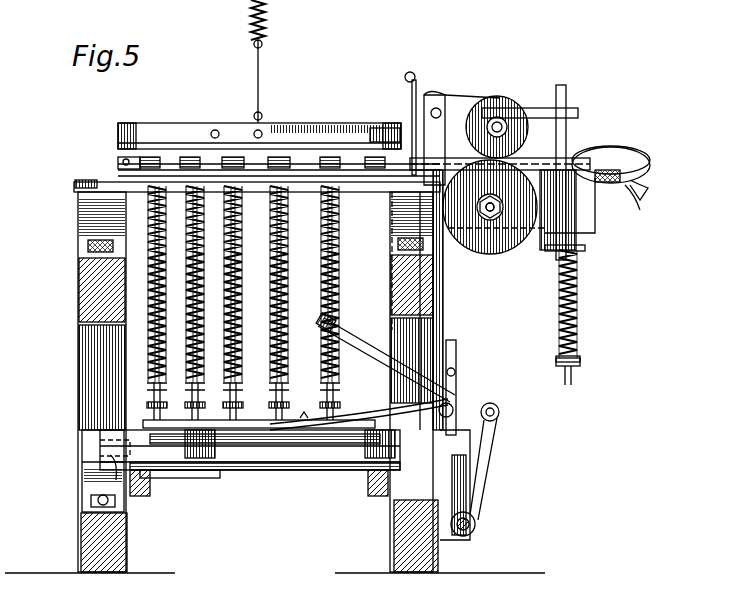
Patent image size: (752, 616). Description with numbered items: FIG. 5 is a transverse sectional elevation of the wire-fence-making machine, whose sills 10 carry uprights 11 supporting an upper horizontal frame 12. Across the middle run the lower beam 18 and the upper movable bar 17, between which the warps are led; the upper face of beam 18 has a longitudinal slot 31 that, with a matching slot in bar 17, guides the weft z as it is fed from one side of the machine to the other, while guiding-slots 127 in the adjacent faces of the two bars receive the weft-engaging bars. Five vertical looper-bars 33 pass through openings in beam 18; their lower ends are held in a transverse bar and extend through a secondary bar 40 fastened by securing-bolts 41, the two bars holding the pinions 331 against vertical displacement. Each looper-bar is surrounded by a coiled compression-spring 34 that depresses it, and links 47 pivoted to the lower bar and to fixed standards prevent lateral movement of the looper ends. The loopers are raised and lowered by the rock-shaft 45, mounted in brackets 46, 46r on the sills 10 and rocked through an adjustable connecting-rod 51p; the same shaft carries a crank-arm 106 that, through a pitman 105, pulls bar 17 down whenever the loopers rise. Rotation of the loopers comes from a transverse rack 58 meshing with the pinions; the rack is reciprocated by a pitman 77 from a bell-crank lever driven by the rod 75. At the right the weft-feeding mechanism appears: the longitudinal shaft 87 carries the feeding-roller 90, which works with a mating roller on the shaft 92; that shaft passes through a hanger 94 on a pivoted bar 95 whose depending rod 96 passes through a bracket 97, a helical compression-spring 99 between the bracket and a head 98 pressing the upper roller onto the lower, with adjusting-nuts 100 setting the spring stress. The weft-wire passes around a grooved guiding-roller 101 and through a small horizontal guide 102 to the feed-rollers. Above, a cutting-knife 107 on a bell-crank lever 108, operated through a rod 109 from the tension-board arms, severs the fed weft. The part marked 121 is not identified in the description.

The sills 10 is at (128, 540).
The uprights 11 is at (80, 393).
The upper horizontal frame 12 is at (90, 305).
The upper movable bar 17 is at (186, 112).
The lower beam 18 is at (122, 168).
The wefts z is at (118, 162).
The longitudinally-disposed slot 31 is at (198, 130).
The looper-bars 33 is at (234, 392).
The pinions 331 is at (200, 470).
The coiled compression-spring 34 is at (250, 258).
The secondary bar 40 is at (160, 420).
The securing-bolts 41 is at (304, 416).
The rock-shaft 45 is at (82, 462).
The brackets 46 is at (100, 468).
The brackets 46r is at (412, 462).
The links 47 is at (145, 494).
The adjustable connecting-rod 51p is at (456, 350).
The rack 58 is at (100, 440).
The rod 75 is at (378, 338).
The pitman 77 is at (380, 420).
The longitudinally-disposed shaft 87 is at (490, 215).
The feeding-roller 90 is at (500, 248).
The shaft 92 is at (498, 100).
The hanger 94 is at (580, 128).
The bar 95 is at (556, 100).
The depending rod 96 is at (565, 140).
The bracket 97 is at (580, 238).
The head or washer 98 is at (580, 360).
The helical compression-spring 99 is at (578, 302).
The adjusting-nuts 100 is at (566, 108).
The grooved guiding-roller 101 is at (640, 158).
The horizontal guide 102 is at (580, 156).
The pitman 105 is at (200, 316).
The crank-arm 106 is at (242, 472).
The cutting-knife 107 is at (420, 125).
The bell-crank lever 108 is at (418, 100).
The rod 109 is at (408, 72).
The guide 121 is at (378, 188).
The guiding-slots 127 is at (380, 128).